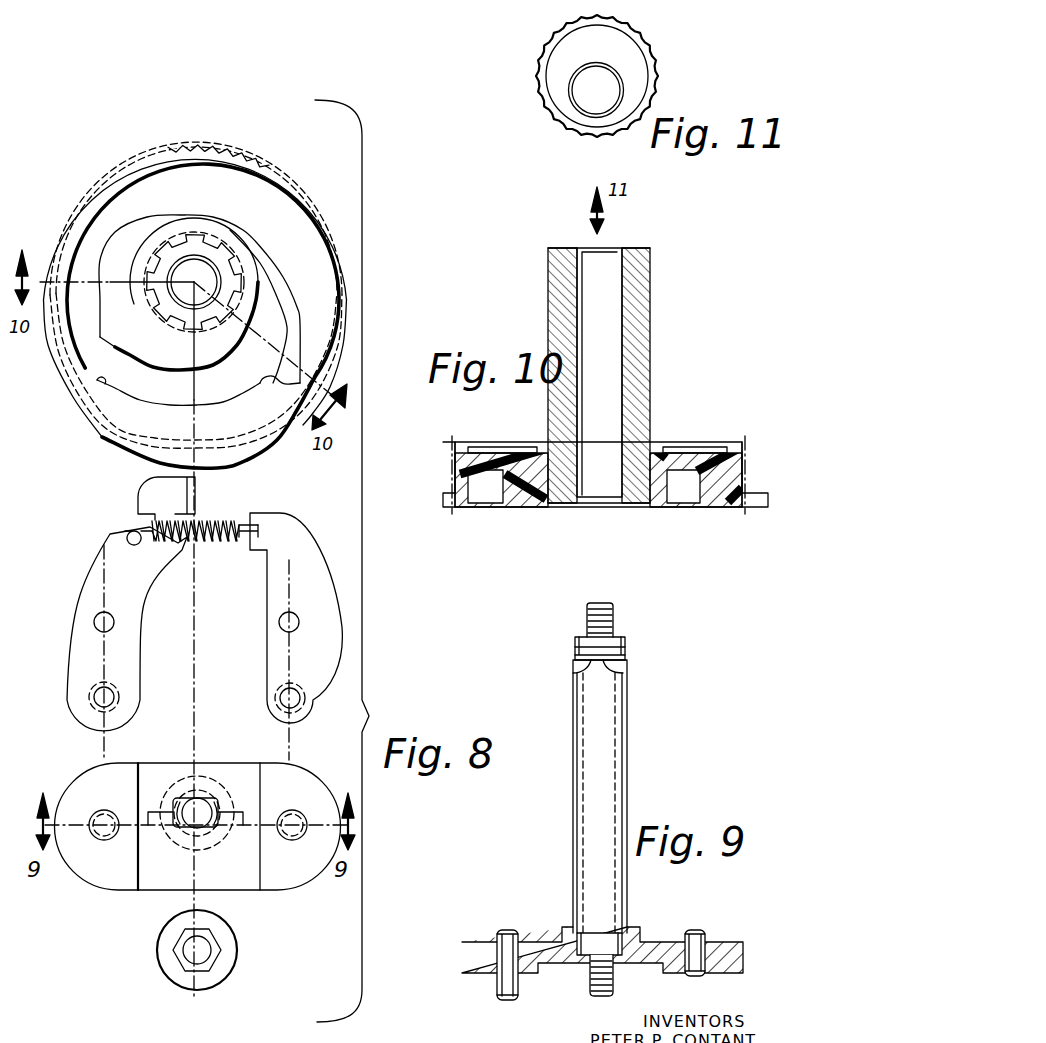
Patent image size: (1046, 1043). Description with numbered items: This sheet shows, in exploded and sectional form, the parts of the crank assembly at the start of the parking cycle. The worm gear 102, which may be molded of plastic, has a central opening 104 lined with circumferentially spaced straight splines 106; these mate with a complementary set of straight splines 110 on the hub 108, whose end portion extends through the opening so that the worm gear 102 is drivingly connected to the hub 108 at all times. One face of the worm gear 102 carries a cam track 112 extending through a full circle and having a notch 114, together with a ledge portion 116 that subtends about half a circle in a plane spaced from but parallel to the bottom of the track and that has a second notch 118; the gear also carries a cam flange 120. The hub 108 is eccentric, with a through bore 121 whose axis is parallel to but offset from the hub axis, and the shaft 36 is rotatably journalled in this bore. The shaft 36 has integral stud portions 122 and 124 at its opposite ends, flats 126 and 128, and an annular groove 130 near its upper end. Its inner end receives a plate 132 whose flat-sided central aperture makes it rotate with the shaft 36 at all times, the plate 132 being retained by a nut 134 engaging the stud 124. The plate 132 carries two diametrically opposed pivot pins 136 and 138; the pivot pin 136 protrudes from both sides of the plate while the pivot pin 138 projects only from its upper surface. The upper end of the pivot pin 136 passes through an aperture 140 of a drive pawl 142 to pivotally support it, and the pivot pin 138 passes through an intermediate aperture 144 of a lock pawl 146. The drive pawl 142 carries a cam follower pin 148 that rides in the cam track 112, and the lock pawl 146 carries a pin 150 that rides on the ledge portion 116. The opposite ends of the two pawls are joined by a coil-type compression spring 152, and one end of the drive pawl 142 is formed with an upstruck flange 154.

In FIG. 8, the shaft 36 is at (204, 803).
In FIG. 9, the shaft 36 is at (613, 743).
In FIG. 8, the worm gear 102 is at (205, 143).
In FIG. 10, the worm gear 102 is at (443, 473).
In FIG. 10, the central opening 104 is at (643, 447).
In FIG. 8, the straight splines 106 is at (178, 250).
In FIG. 10, the straight splines 106 is at (650, 498).
In FIG. 8, the hub 108 is at (173, 330).
In FIG. 11, the hub 108 is at (633, 63).
In FIG. 10, the hub 108 is at (688, 319).
In FIG. 8, the straight splines 110 is at (146, 287).
In FIG. 10, the straight splines 110 is at (555, 500).
In FIG. 8, the cam track 112 is at (78, 232).
In FIG. 10, the cam track 112 is at (478, 497).
In FIG. 8, the notch 114 is at (97, 380).
In FIG. 8, the ledge portion 116 is at (292, 263).
In FIG. 10, the ledge portion 116 is at (720, 497).
In FIG. 8, the second notch 118 is at (262, 386).
In FIG. 8, the cam flange 120 is at (262, 452).
In FIG. 8, the through bore 121 is at (170, 273).
In FIG. 11, the through bore 121 is at (587, 103).
In FIG. 10, the through bore 121 is at (612, 262).
In FIG. 9, the stud portion 122 is at (608, 607).
In FIG. 9, the stud portion 124 is at (588, 987).
In FIG. 9, the flat 126 is at (612, 643).
In FIG. 9, the flat 128 is at (607, 943).
In FIG. 9, the annular groove 130 is at (620, 668).
In FIG. 8, the plate 132 is at (118, 882).
In FIG. 9, the plate 132 is at (768, 931).
In FIG. 8, the nut 134 is at (221, 950).
In FIG. 8, the pivot pin 136 is at (100, 840).
In FIG. 9, the pivot pin 136 is at (535, 910).
In FIG. 8, the pivot pin 138 is at (293, 838).
In FIG. 9, the pivot pin 138 is at (697, 929).
In FIG. 8, the aperture 140 is at (96, 623).
In FIG. 8, the drive pawl 142 is at (100, 574).
In FIG. 8, the intermediate aperture 144 is at (280, 625).
In FIG. 8, the lock pawl 146 is at (267, 673).
In FIG. 8, the cam follower pin 148 is at (97, 701).
In FIG. 8, the pin 150 is at (293, 705).
In FIG. 8, the compression spring 152 is at (213, 542).
In FIG. 8, the upstruck flange 154 is at (195, 493).